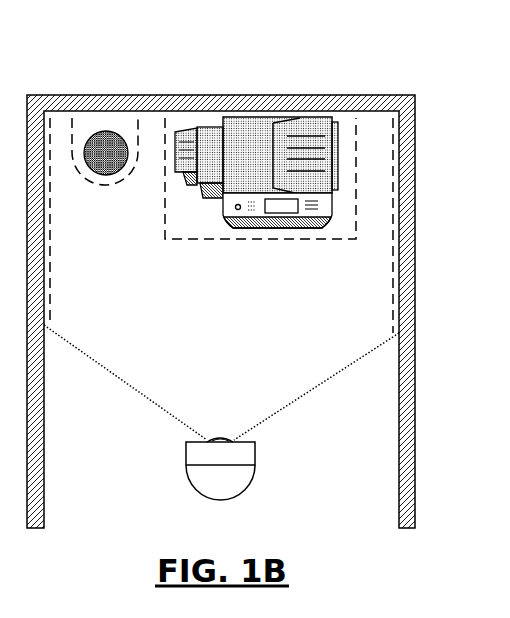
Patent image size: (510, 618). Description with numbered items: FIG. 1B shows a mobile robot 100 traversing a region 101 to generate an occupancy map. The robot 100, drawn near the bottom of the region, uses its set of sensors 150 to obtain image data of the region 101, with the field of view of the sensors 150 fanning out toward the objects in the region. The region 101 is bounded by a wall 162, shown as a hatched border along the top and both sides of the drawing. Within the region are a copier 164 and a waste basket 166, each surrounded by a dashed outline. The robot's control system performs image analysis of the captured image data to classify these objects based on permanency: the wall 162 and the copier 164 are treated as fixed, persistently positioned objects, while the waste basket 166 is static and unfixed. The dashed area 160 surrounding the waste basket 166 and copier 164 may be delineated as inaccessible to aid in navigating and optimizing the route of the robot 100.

The mobile robot 100 is at (204, 486).
The region 101 is at (288, 397).
The set of sensors 150 is at (245, 457).
The designated region 160 is at (160, 244).
The wall 162 is at (409, 171).
The copier 164 is at (297, 120).
The waste basket 166 is at (106, 150).